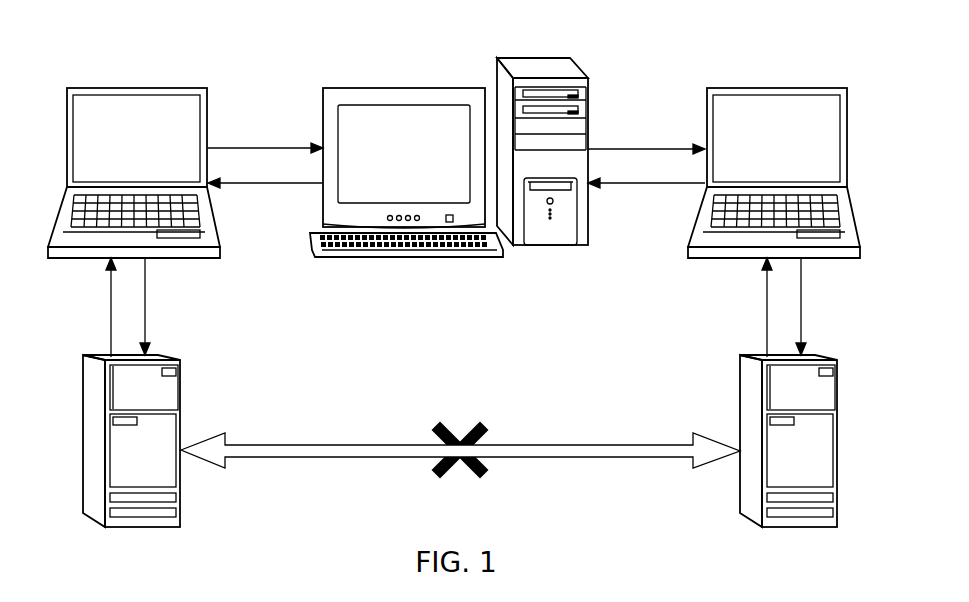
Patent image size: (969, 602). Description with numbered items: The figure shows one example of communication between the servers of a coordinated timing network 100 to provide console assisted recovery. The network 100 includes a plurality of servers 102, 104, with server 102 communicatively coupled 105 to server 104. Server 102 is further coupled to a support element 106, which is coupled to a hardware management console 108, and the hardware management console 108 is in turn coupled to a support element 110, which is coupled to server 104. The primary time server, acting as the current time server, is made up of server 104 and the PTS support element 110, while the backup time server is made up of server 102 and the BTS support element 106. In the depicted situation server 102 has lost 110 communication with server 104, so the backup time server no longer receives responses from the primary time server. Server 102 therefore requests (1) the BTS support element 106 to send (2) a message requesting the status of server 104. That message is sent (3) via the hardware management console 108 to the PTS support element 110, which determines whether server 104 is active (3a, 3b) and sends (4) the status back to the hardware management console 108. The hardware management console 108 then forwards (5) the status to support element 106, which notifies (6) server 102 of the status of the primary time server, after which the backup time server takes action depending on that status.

The coordinated timing network 100 is at (798, 25).
The server 102 is at (182, 388).
The server 104 is at (740, 388).
The communicative coupling 105 is at (566, 443).
The support element 106 is at (137, 88).
The hardware management console 108 is at (405, 88).
The support element 110 is at (778, 88).
The request 1 is at (101, 307).
The send 2 is at (265, 139).
The sent via HMC 3 is at (646, 140).
The determines whether server is active 3a is at (817, 306).
The determines whether server is active 3b is at (753, 307).
The send status 4 is at (646, 174).
The forward status 5 is at (265, 174).
The notify 6 is at (151, 306).